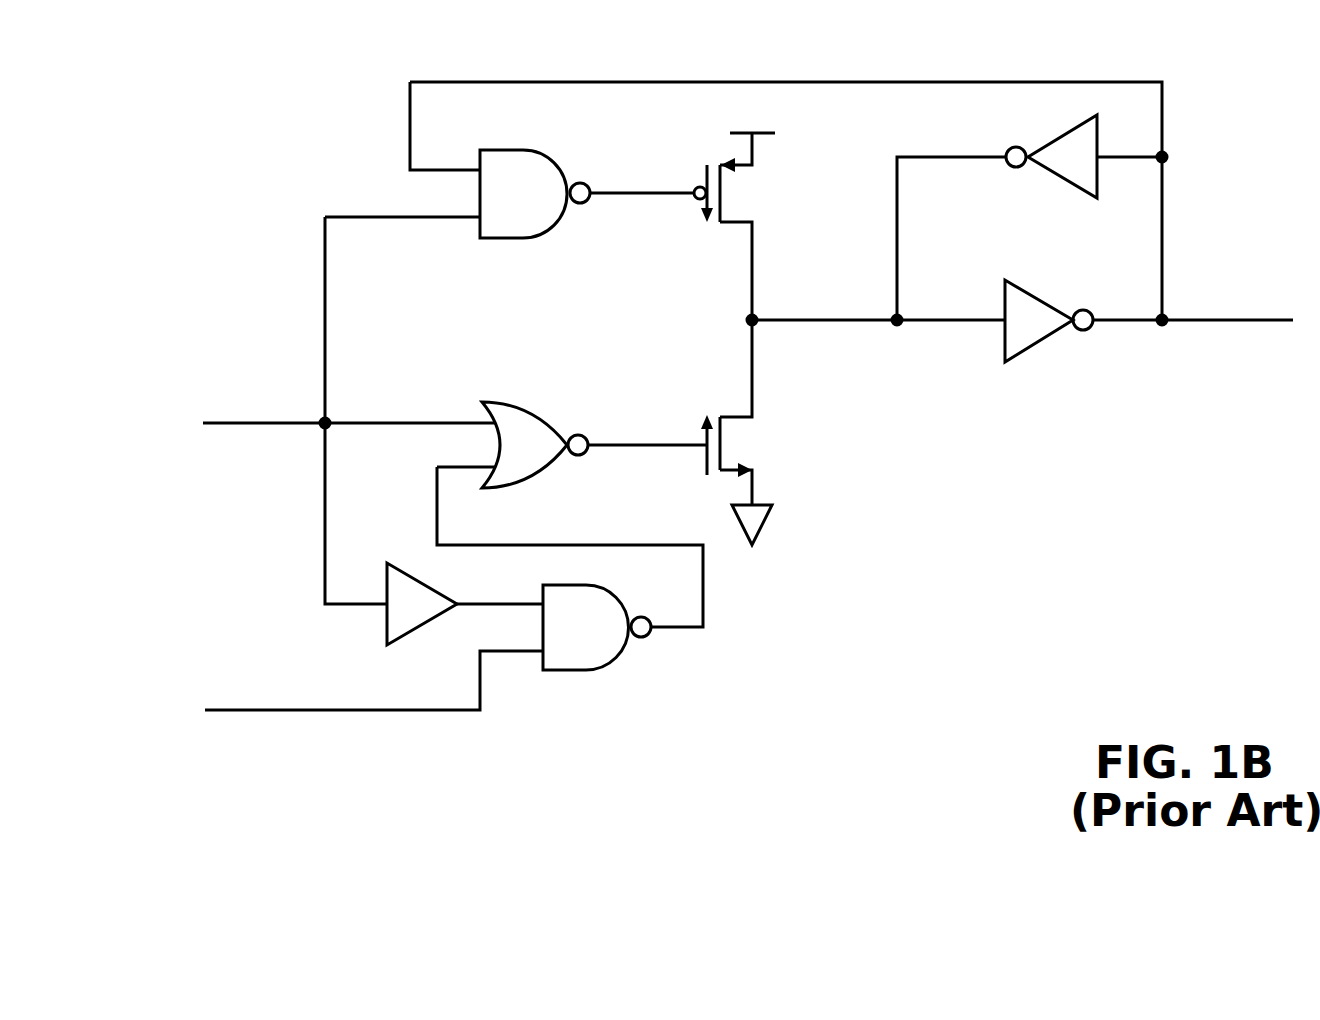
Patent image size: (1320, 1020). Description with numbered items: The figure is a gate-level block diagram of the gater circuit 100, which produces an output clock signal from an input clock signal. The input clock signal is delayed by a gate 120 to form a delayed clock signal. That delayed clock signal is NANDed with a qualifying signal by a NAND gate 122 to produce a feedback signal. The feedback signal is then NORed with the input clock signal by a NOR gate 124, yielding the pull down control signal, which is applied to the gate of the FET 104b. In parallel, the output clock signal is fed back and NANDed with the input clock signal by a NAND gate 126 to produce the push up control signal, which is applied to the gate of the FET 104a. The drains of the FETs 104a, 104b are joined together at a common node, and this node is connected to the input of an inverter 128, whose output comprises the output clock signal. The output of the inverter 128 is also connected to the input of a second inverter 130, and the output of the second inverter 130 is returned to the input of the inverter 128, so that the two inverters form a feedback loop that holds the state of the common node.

The circuit 100 is at (238, 100).
The FET 104a is at (748, 190).
The FET 104b is at (748, 445).
The gate 120 is at (385, 615).
The NAND gate 122 is at (608, 672).
The NOR gate 124 is at (530, 405).
The NAND gate 126 is at (530, 150).
The inverter 128 is at (1045, 340).
The second inverter 130 is at (1058, 138).